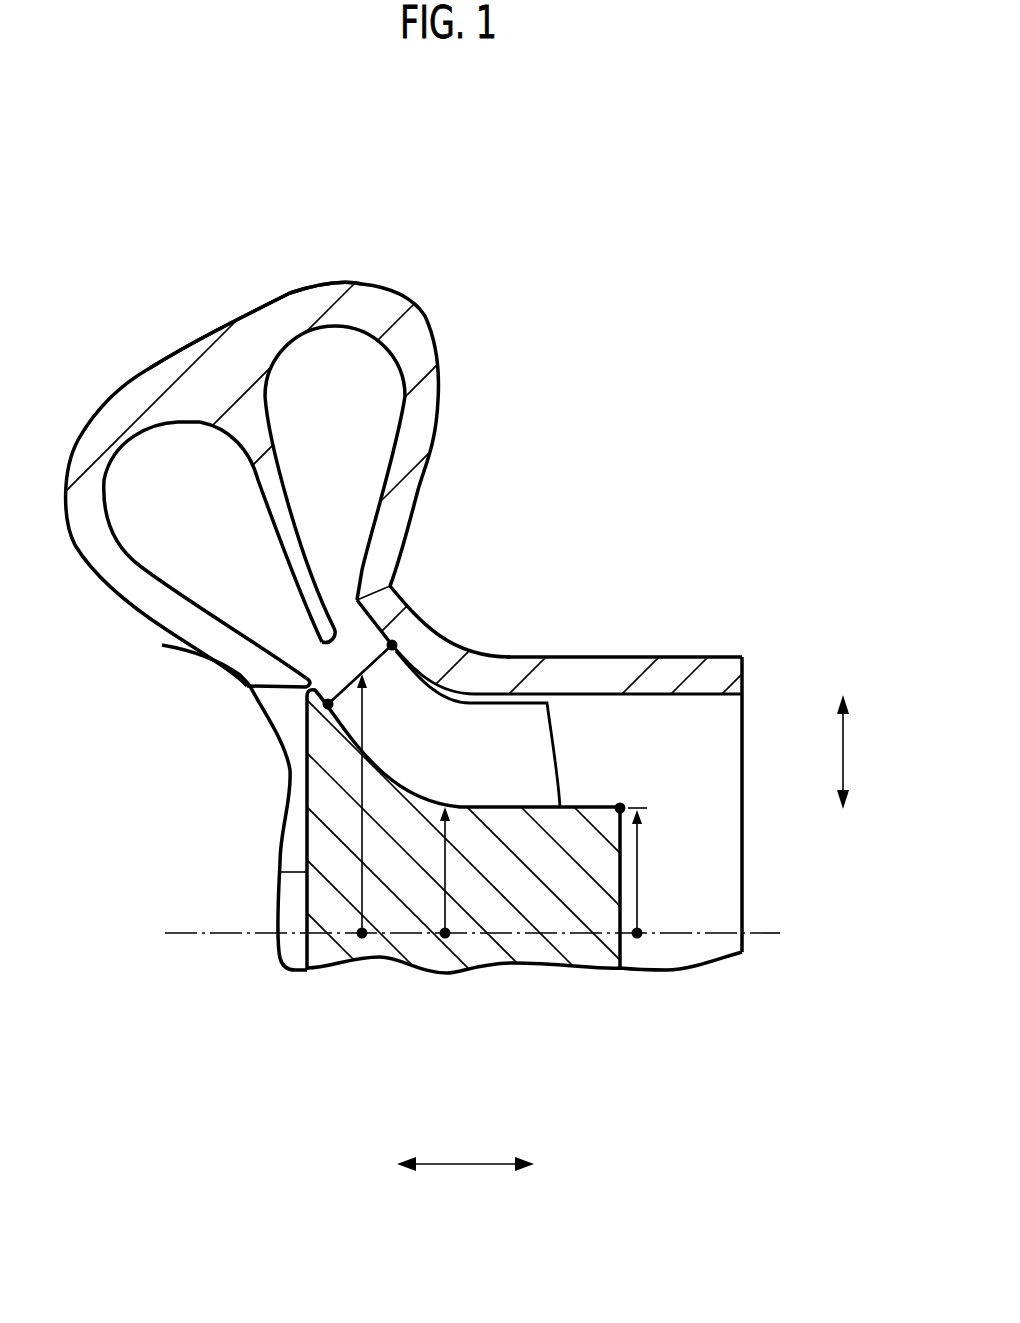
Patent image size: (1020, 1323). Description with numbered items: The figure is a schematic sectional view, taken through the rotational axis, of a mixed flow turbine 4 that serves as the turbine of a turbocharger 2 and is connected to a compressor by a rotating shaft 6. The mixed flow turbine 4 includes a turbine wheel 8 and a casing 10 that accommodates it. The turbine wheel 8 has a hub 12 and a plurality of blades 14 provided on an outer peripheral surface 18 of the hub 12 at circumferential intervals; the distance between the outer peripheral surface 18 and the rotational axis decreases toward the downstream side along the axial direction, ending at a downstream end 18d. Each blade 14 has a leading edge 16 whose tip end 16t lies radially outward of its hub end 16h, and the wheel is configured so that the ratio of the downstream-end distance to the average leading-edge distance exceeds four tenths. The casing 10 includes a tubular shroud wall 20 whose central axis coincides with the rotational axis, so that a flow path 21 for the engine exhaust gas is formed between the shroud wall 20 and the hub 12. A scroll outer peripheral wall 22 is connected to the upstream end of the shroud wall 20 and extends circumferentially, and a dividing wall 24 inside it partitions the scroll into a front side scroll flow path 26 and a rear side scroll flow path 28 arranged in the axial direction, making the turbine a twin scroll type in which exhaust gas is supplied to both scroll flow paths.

The turbocharger 2 is at (616, 320).
The mixed flow turbine 4 is at (541, 402).
The rotating shaft 6 is at (290, 905).
The turbine wheel 8 is at (383, 834).
The hub 12 is at (494, 910).
The casing 10 is at (407, 294).
The blade 14 is at (468, 730).
The leading edge 16 is at (396, 582).
The tip end 16t is at (396, 643).
The hub end 16h is at (326, 707).
The outer peripheral surface 18 is at (575, 805).
The downstream end 18d is at (622, 805).
The shroud wall 20 is at (507, 655).
The flow path 21 is at (520, 750).
The scroll outer peripheral wall 22 is at (218, 324).
The dividing wall 24 is at (212, 492).
The front side scroll flow path 26 is at (338, 375).
The rear side scroll flow path 28 is at (152, 517).